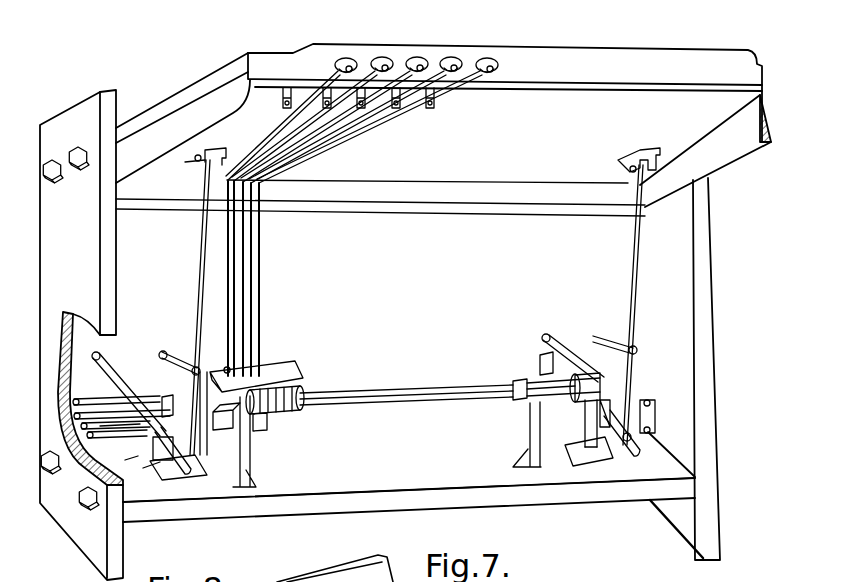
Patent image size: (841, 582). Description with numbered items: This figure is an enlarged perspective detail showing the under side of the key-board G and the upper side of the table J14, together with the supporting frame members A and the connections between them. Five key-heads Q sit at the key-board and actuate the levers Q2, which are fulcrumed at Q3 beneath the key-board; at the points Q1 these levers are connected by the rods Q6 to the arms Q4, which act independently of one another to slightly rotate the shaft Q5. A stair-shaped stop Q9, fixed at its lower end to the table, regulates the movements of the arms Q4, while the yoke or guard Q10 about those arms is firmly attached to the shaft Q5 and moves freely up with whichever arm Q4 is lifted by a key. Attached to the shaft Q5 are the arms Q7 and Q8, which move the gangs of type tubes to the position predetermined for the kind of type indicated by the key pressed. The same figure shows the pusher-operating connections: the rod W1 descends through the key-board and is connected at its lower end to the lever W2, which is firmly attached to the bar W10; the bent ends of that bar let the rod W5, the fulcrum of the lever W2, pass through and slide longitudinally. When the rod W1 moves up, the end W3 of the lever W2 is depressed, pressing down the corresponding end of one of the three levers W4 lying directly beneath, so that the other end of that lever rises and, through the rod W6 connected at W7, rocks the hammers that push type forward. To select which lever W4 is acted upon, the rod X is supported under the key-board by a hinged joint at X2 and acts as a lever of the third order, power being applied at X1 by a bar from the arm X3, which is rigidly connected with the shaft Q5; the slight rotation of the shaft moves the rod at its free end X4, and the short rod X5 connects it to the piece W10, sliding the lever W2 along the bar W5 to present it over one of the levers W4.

The frame side plate A is at (380, 335).
The key-board G is at (505, 93).
The keys Q is at (483, 58).
The levers Q2 is at (354, 127).
The fulcrum Q3 is at (431, 112).
The rods Q6 is at (240, 298).
The connection point Q1 is at (210, 174).
The hinged joint X2 is at (414, 159).
The rod X is at (195, 287).
The arms Q4 is at (274, 386).
The yoke Q10 is at (263, 374).
The shaft Q5 is at (369, 381).
The arm Q7 is at (251, 454).
The lever W2 is at (125, 378).
The rod W1 is at (87, 397).
The bar W10 is at (105, 385).
The arm X3 is at (168, 364).
The power point X1 is at (645, 349).
The rod W5 is at (397, 453).
The free end X4 is at (176, 450).
The connection point W7 is at (118, 430).
The stair-shaped stop Q9 is at (228, 367).
The short rod X5 is at (158, 474).
The rod W6 is at (657, 418).
The levers W4 is at (513, 383).
The end of lever W2 W3 is at (518, 378).
The arm Q8 is at (577, 456).
The bed plate J14 is at (409, 474).